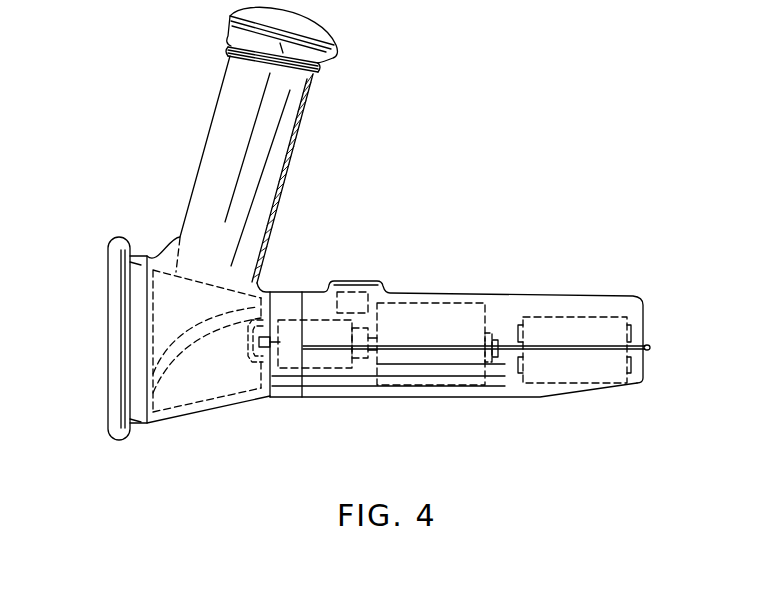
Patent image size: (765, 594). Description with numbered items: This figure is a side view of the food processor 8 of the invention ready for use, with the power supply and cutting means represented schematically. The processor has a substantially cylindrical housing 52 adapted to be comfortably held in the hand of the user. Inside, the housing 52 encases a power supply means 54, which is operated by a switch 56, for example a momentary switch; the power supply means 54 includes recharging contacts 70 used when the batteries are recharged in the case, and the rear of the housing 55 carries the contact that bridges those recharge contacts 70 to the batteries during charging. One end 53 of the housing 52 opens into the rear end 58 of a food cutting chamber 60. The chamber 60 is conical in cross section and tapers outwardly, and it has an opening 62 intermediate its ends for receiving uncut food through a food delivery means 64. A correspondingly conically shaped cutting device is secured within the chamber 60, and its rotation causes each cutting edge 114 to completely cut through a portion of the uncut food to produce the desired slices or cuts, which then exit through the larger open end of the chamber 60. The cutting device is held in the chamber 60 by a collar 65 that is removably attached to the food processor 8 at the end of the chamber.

The food processor 8 is at (470, 329).
The housing 52 is at (497, 293).
The end of the housing 53 is at (268, 396).
The power supply means 54 is at (580, 309).
The rear of the housing 55 is at (643, 384).
The switch 56 is at (353, 279).
The rear end of the food cutting chamber 58 is at (263, 304).
The food cutting chamber 60 is at (231, 394).
The opening 62 is at (180, 238).
The food delivery means 64 is at (296, 176).
The collar 65 is at (113, 248).
The recharging contacts 70 is at (651, 347).
The cutting edges 114 is at (180, 348).